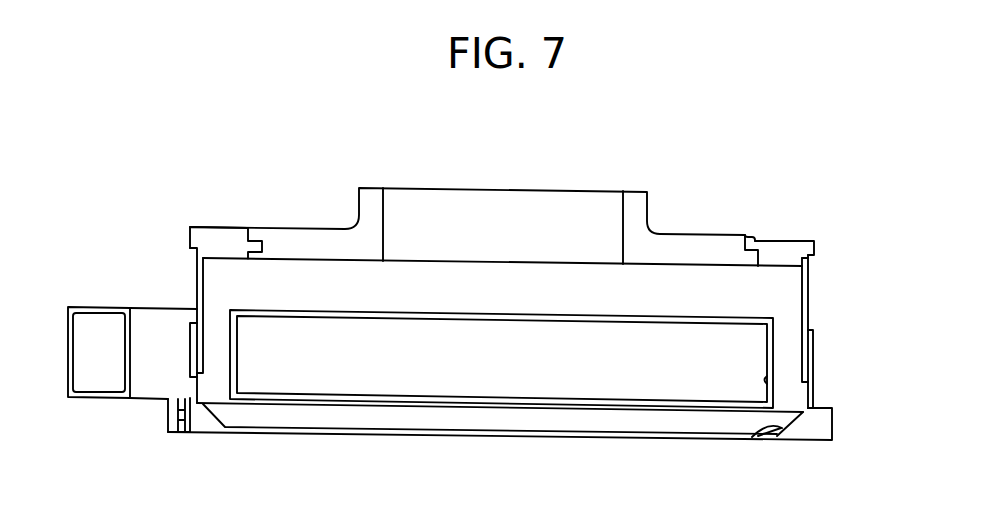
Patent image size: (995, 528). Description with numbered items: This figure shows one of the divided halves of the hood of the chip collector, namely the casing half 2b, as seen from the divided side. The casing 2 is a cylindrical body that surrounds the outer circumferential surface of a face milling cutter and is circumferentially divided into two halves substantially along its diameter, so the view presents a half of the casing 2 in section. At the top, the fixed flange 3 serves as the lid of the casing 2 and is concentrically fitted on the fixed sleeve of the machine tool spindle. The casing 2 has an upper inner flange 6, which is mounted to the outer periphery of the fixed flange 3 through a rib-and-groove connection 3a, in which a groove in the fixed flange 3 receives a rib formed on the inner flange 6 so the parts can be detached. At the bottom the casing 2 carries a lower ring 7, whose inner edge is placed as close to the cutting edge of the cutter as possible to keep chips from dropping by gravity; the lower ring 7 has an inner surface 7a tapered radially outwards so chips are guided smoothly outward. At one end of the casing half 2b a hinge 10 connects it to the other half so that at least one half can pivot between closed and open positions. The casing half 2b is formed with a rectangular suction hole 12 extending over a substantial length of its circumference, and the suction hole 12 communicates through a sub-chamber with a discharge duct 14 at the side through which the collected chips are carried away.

The cylindrical casing 2 is at (808, 306).
The casing half 2b is at (812, 273).
The fixed flange 3 is at (695, 242).
The rib-and-groove connection 3a is at (746, 240).
The inner flange 6 is at (787, 247).
The lower ring 7 is at (213, 428).
The inner surface 7a is at (755, 437).
The hinge 10 is at (185, 430).
The suction hole 12 is at (768, 381).
The discharge duct 14 is at (102, 383).